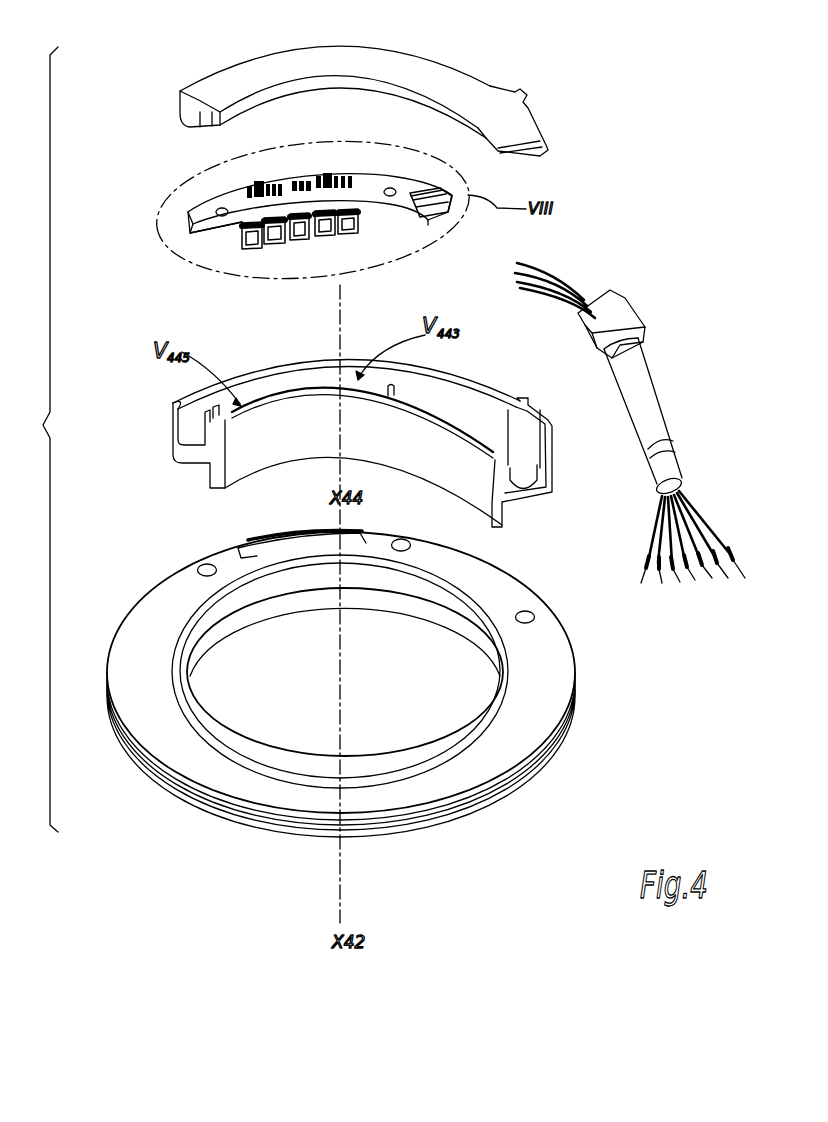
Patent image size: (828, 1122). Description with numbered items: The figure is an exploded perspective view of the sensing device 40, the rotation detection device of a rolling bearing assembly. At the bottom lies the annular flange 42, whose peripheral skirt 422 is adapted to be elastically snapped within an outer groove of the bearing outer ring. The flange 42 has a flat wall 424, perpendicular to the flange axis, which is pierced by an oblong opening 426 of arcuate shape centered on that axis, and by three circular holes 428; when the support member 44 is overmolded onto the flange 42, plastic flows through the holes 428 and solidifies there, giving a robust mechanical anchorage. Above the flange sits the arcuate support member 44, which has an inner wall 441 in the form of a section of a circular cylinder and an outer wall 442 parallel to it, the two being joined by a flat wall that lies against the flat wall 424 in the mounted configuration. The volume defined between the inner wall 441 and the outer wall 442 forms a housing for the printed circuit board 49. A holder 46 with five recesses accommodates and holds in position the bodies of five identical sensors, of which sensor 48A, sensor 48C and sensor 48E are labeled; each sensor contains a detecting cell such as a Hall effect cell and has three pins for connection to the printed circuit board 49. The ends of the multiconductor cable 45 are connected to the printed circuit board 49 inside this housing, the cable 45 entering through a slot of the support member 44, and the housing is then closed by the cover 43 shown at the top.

The sensing device 40 is at (39, 439).
The annular flange 42 is at (407, 669).
The peripheral skirt 422 is at (565, 752).
The flat wall 424 is at (452, 747).
The oblong opening 426 is at (250, 533).
The circular holes 428 is at (205, 565).
The cover 43 is at (424, 72).
The support member 44 is at (328, 425).
The inner wall 441 is at (258, 432).
The outer wall 442 is at (290, 380).
The multiconductor cable 45 is at (645, 400).
The holder 46 is at (235, 238).
The sensor 48A is at (250, 244).
The sensor 48C is at (306, 238).
The sensor 48E is at (352, 233).
The printed circuit board 49 is at (370, 180).